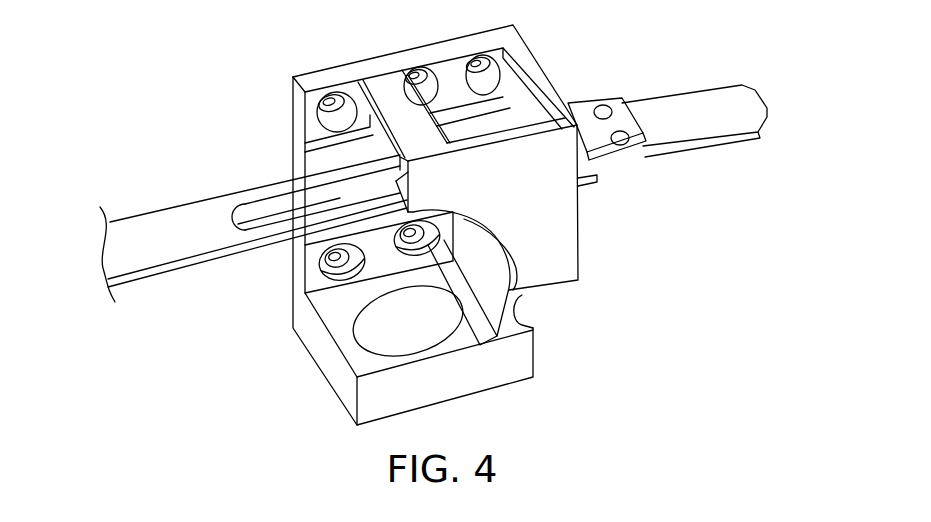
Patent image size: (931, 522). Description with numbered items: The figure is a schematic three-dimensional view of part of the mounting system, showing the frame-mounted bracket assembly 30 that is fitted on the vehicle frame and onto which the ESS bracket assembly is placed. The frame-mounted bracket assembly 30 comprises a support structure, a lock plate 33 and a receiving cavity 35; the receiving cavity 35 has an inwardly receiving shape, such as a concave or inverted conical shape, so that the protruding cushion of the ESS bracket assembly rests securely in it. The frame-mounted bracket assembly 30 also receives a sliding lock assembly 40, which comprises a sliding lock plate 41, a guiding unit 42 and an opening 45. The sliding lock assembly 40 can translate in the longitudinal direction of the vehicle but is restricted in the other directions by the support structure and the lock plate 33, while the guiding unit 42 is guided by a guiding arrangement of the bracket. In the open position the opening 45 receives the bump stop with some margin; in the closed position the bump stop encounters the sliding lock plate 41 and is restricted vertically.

The frame-mounted bracket assembly 30 is at (295, 357).
The lock plate 33 is at (567, 273).
The receiving cavity 35 is at (425, 333).
The sliding lock assembly 40 is at (227, 172).
The sliding lock plate 41 is at (718, 90).
The guiding unit 42 is at (617, 150).
The opening 45 is at (278, 205).